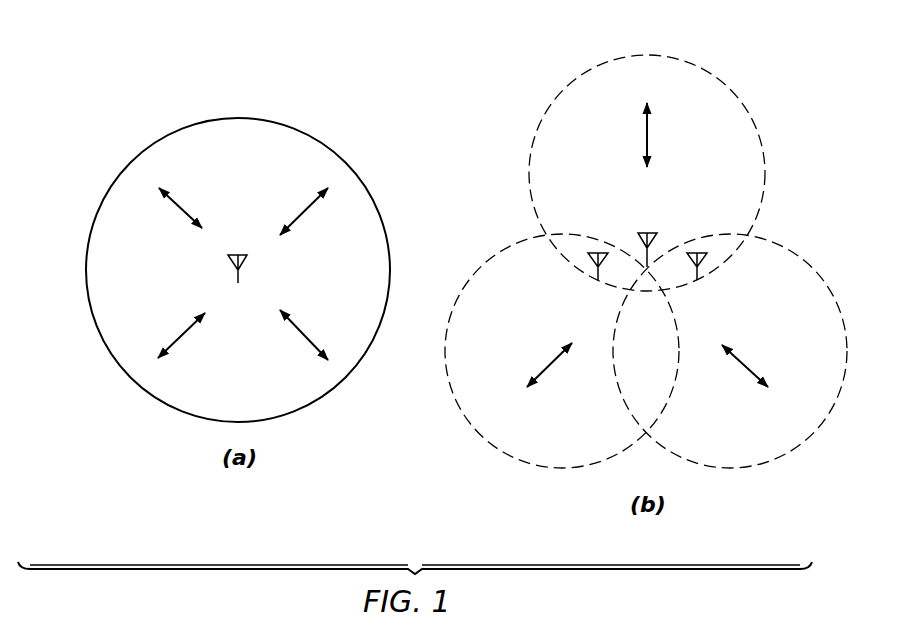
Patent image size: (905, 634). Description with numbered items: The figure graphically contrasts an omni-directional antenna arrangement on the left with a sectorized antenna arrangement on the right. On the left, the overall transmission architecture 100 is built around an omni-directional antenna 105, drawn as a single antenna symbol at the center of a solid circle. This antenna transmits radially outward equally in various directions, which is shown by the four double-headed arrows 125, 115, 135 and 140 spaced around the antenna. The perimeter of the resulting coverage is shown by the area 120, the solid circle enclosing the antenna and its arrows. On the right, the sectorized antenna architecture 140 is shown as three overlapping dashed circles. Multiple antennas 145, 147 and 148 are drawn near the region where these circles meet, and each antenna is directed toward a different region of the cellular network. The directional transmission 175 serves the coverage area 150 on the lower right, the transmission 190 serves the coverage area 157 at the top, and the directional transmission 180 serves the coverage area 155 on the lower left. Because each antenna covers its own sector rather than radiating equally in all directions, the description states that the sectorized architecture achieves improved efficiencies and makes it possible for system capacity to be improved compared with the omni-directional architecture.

The transmission architecture 100 is at (90, 120).
The omni-directional antenna 105 is at (238, 280).
The arrow 115 is at (306, 336).
The area 120 is at (86, 270).
The arrow 125 is at (180, 338).
The arrow 135 is at (180, 208).
The sectorized antenna architecture 140 is at (313, 207).
The antenna 145 is at (700, 275).
The antenna 147 is at (656, 236).
The antenna 148 is at (595, 275).
The coverage area 150 is at (740, 466).
The coverage area 155 is at (553, 466).
The coverage area 157 is at (530, 148).
The directional transmission 175 is at (746, 366).
The directional transmission 180 is at (548, 364).
The transmission 190 is at (645, 135).